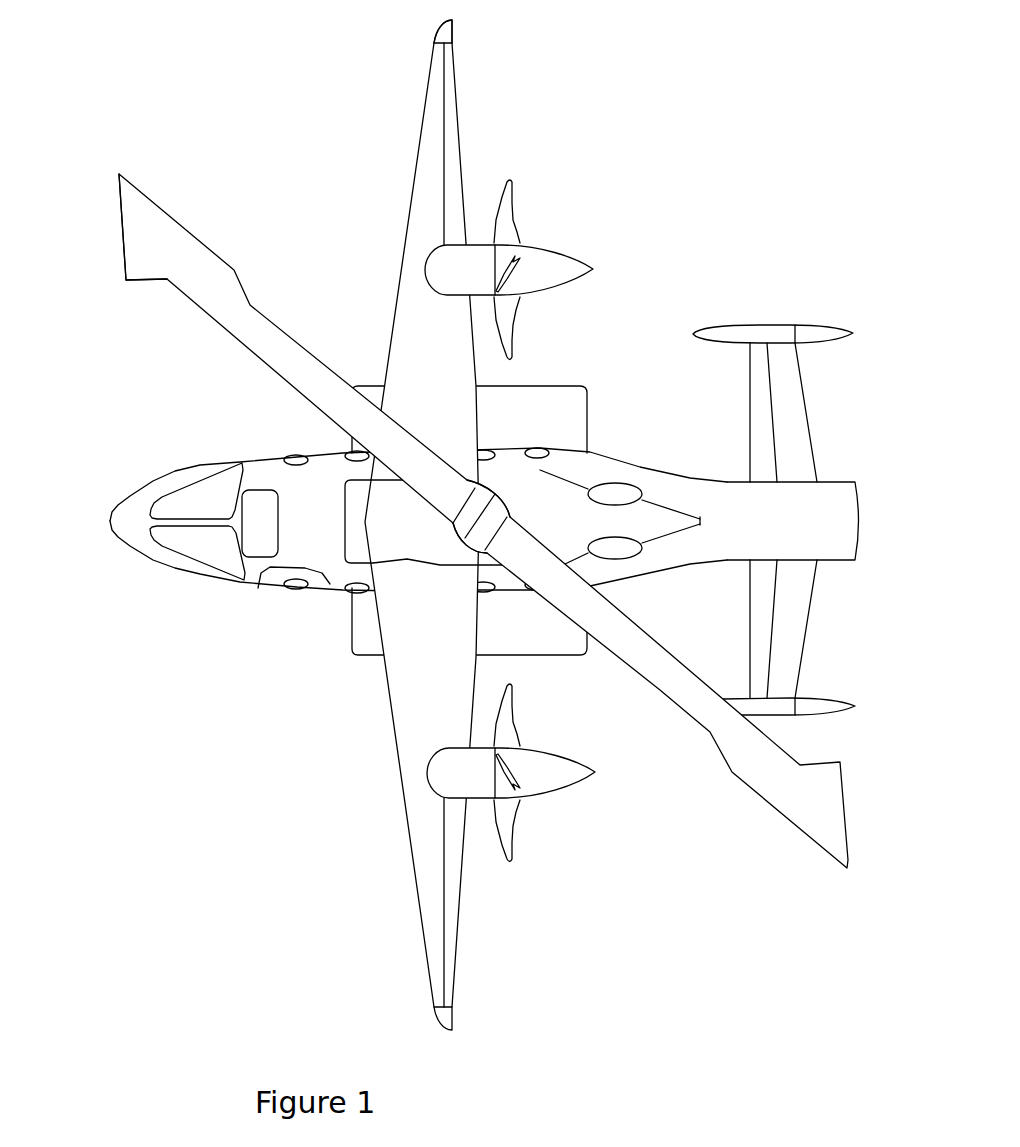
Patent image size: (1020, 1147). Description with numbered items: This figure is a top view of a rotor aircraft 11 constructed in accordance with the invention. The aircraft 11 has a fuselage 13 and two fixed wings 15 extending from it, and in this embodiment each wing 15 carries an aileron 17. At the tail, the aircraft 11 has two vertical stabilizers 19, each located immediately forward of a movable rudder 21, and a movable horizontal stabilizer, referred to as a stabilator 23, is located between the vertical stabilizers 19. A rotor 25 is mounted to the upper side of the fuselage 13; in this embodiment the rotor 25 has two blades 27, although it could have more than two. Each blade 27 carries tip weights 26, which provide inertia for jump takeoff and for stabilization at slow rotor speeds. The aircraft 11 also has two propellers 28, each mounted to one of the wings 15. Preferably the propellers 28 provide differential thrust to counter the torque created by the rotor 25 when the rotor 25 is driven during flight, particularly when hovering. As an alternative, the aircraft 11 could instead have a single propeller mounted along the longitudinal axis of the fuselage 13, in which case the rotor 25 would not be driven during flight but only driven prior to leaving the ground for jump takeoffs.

The rotor aircraft 11 is at (476, 525).
The fuselage 13 is at (128, 511).
The fixed wing 15 is at (404, 217).
The aileron 17 is at (458, 92).
The vertical stabilizer 19 is at (757, 325).
The rudder 21 is at (822, 325).
The stabilator 23 is at (813, 442).
The rotor 25 is at (534, 489).
The tip weights 26 is at (132, 274).
The blade 27 is at (245, 339).
The propeller 28 is at (516, 218).